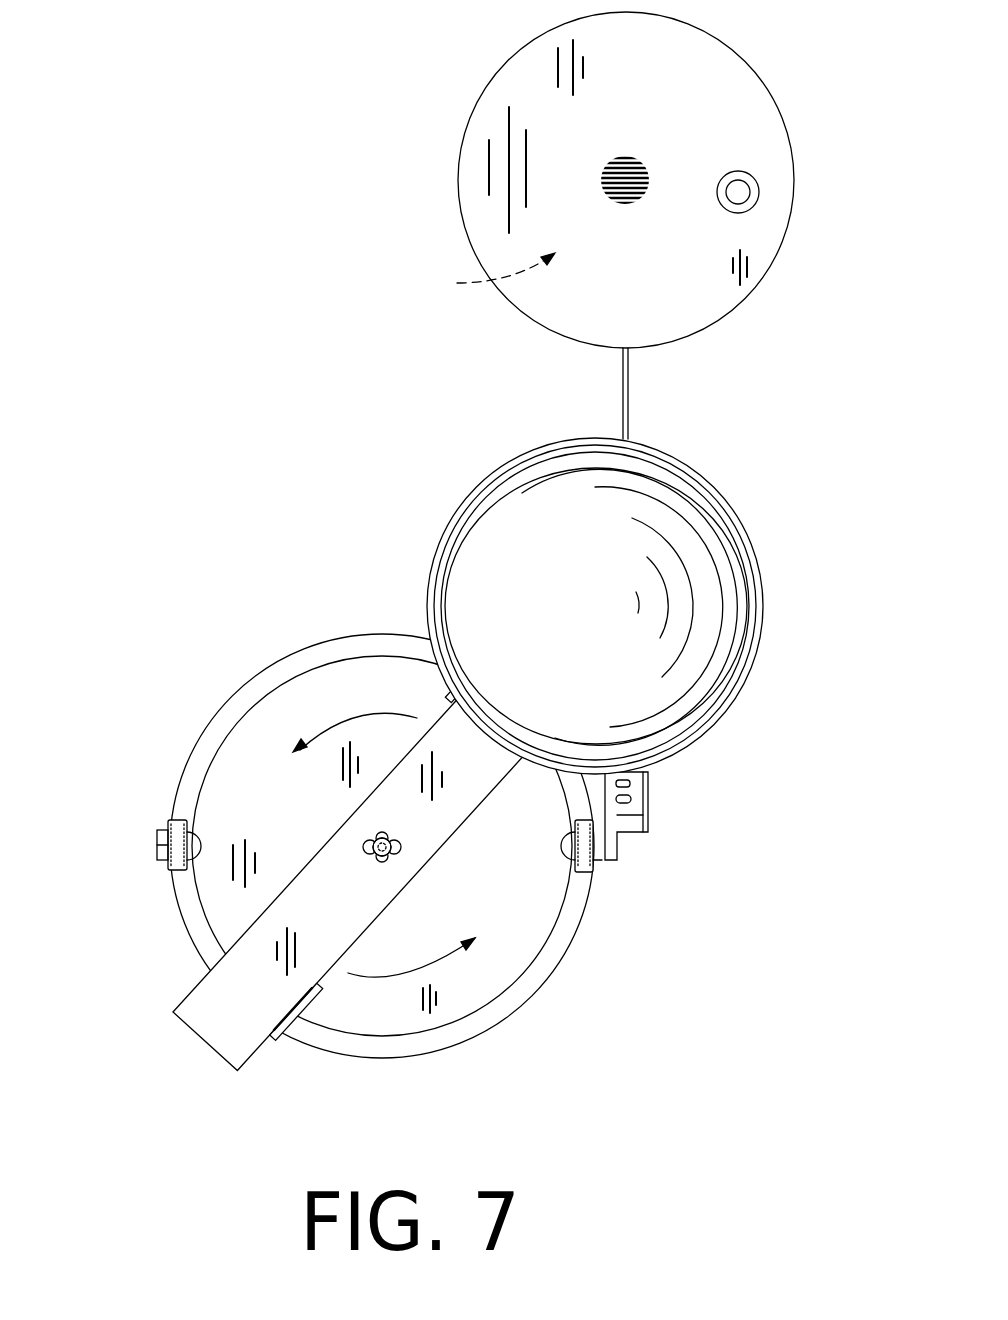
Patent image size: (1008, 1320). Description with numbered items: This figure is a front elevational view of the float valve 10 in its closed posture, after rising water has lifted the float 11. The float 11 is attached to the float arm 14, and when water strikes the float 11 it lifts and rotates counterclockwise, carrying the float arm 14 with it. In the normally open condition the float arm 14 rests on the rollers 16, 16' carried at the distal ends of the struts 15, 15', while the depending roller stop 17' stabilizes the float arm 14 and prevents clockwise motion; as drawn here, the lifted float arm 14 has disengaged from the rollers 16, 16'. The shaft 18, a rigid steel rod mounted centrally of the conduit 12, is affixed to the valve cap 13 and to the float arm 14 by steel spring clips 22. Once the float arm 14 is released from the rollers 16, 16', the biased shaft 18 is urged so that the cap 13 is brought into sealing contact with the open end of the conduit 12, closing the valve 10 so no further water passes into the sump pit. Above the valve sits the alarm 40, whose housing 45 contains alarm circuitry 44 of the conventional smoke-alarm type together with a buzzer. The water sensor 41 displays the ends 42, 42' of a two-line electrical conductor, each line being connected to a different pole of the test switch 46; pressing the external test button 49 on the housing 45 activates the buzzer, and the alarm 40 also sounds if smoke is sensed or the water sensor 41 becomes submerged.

The float valve 10 is at (153, 388).
The float 11 is at (722, 660).
The conduit 12 is at (297, 657).
The valve cap 13 is at (222, 809).
The float arm 14 is at (310, 912).
The strut 15 is at (606, 931).
The strut 15' is at (106, 878).
The roller 16 is at (548, 873).
The roller 16' is at (156, 822).
The roller stop 17' is at (294, 1058).
The shaft 18 is at (363, 850).
The spring clip 22 is at (382, 862).
The alarm 40 is at (318, 112).
The water sensor 41 is at (637, 800).
The conductor end 42 is at (681, 779).
The conductor end 42' is at (665, 850).
The alarm circuitry 44 is at (475, 266).
The housing 45 is at (728, 125).
The test switch 46 is at (765, 213).
The test button 49 is at (738, 195).